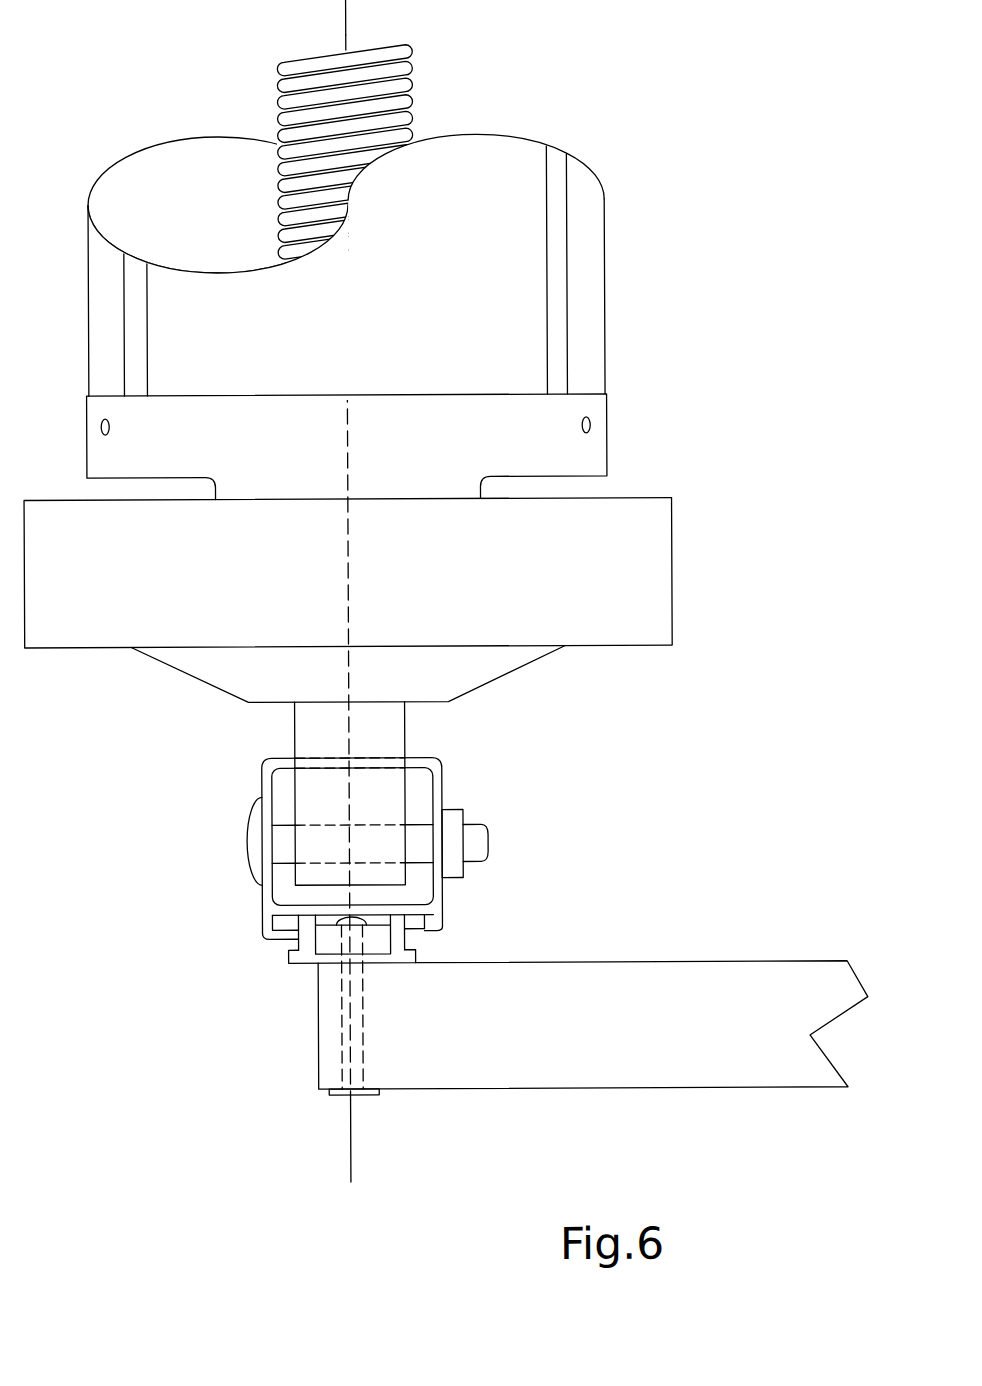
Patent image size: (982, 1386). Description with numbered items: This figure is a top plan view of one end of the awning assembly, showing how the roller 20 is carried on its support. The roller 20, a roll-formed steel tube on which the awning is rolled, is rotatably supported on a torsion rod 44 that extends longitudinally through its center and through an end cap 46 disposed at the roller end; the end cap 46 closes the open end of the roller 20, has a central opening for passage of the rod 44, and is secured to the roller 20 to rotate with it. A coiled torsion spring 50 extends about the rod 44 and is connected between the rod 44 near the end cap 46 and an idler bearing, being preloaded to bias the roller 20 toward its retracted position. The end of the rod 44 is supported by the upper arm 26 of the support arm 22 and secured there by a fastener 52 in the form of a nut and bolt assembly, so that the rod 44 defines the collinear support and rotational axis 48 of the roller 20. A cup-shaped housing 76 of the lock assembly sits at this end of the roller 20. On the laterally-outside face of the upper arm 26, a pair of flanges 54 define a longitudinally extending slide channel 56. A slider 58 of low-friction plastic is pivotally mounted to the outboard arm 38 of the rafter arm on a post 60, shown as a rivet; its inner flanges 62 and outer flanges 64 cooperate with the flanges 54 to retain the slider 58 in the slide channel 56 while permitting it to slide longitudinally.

The roller 20 is at (391, 222).
The support arm 22 is at (258, 787).
The upper arm 26 is at (268, 763).
The outboard arm 38 is at (527, 1089).
The torsion rod 44 is at (404, 735).
The end cap 46 is at (608, 431).
The rotational axis 48 is at (348, 35).
The coiled torsion spring 50 is at (415, 82).
The fastener 52 is at (487, 845).
The flanges 54 is at (440, 935).
The slide channel 56 is at (297, 915).
The slider 58 is at (297, 960).
The post 60 is at (355, 1095).
The inner flanges 62 is at (402, 917).
The outer flanges 64 is at (415, 950).
The housing 76 is at (672, 579).